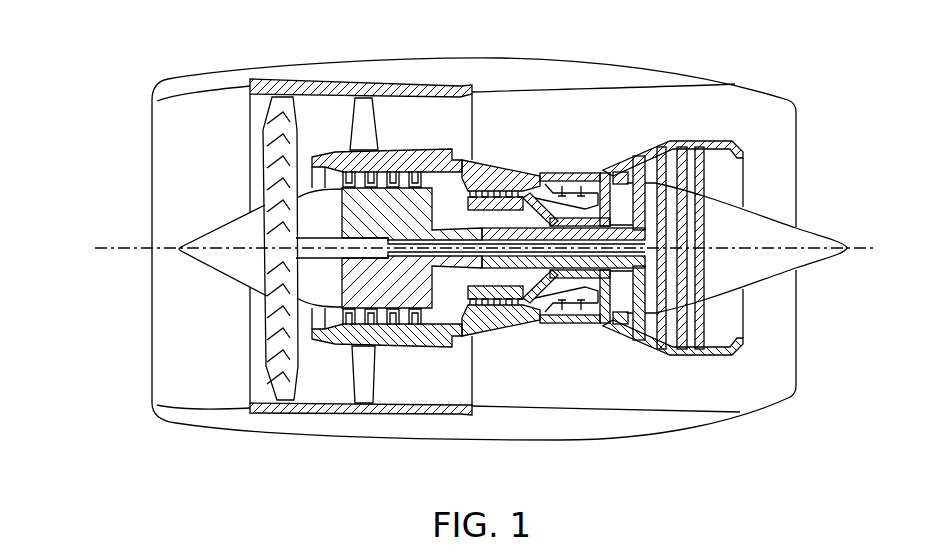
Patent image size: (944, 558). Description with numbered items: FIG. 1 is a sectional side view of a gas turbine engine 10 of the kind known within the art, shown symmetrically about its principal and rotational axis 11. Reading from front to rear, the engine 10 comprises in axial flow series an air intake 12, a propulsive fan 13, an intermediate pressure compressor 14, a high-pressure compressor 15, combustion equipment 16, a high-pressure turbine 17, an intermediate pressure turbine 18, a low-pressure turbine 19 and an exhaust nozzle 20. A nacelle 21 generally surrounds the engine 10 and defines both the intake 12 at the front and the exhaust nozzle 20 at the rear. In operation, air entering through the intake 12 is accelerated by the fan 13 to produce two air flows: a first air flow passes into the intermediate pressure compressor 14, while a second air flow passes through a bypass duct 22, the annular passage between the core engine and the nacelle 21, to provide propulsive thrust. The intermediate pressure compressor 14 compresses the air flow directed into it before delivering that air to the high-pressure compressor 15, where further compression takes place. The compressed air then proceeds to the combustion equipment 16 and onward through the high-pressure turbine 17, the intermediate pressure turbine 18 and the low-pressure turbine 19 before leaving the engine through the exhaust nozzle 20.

The gas turbine engine 10 is at (121, 123).
The principal and rotational axis 11 is at (163, 247).
The air intake 12 is at (213, 90).
The propulsive fan 13 is at (272, 358).
The intermediate pressure compressor 14 is at (375, 322).
The high-pressure compressor 15 is at (513, 175).
The combustion equipment 16 is at (557, 313).
The high-pressure turbine 17 is at (603, 330).
The intermediate pressure turbine 18 is at (637, 166).
The low-pressure turbine 19 is at (657, 340).
The exhaust nozzle 20 is at (796, 380).
The nacelle 21 is at (500, 70).
The bypass duct 22 is at (440, 136).